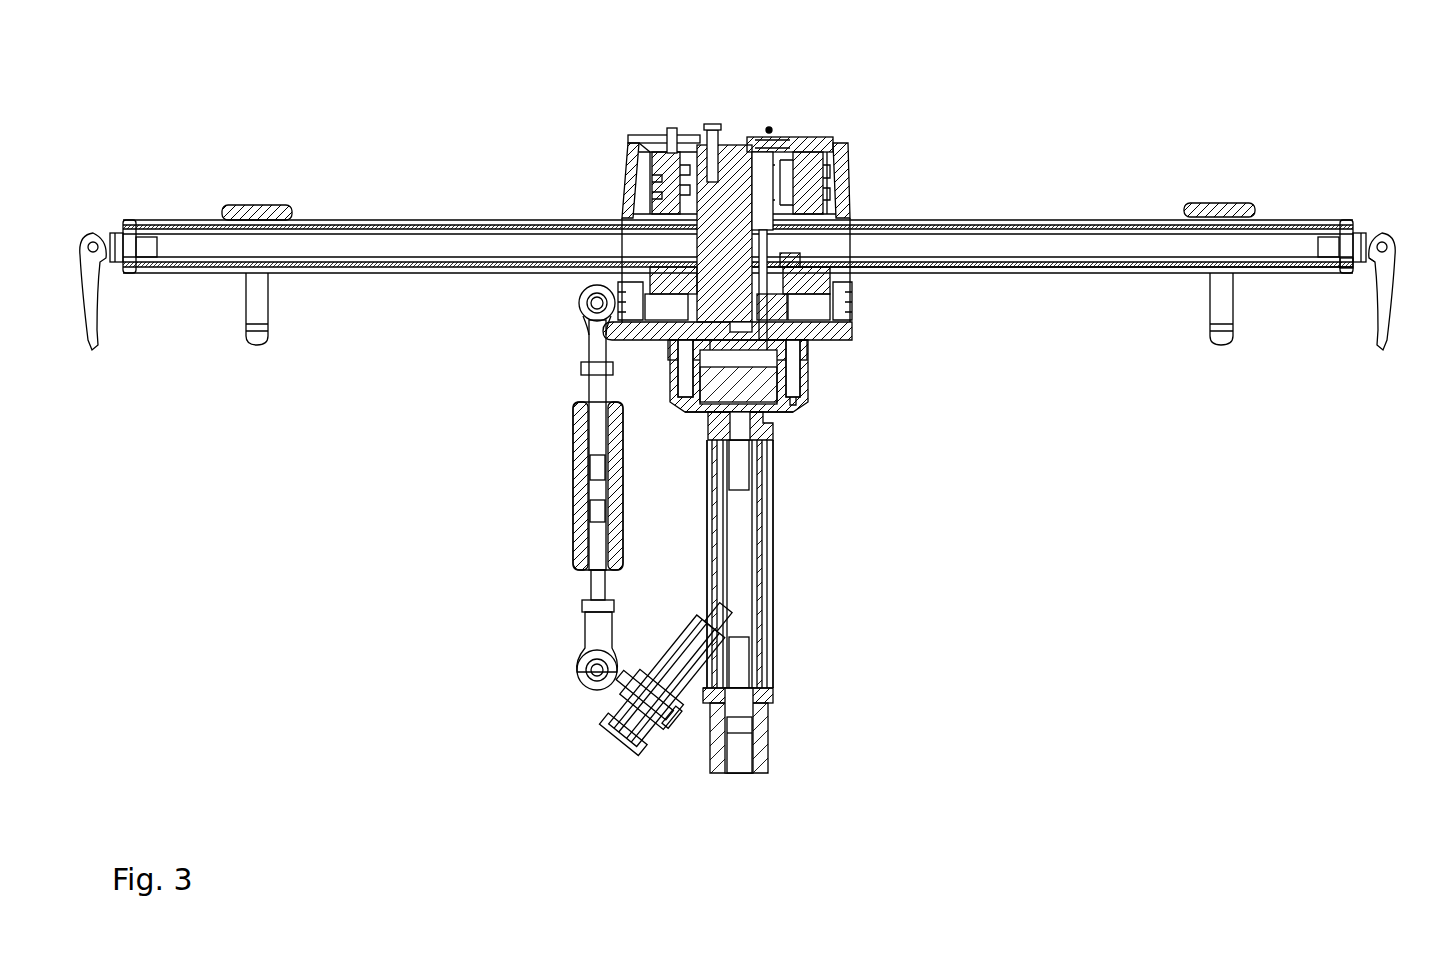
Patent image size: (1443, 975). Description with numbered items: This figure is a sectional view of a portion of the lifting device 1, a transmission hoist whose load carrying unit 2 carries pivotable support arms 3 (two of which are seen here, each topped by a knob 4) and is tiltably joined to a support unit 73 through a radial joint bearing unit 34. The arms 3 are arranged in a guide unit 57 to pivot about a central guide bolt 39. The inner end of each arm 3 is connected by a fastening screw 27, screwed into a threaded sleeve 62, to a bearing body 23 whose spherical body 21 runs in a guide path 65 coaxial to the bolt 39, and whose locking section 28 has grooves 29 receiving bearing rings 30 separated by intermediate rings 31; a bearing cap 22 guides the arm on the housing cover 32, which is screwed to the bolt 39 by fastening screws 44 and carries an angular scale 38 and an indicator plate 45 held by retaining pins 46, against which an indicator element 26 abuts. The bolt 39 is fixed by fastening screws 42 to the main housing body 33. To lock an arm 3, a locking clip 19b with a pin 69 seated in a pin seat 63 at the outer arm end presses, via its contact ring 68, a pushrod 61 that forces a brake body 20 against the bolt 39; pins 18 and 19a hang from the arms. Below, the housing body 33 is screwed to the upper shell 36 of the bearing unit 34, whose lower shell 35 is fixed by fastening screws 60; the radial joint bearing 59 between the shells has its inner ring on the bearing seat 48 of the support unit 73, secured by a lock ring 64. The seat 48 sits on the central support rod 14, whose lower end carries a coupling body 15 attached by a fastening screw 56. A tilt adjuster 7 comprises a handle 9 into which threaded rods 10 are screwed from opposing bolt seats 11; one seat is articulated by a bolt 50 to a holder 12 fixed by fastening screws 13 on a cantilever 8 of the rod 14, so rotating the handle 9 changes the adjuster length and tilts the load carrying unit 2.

The lifting device 1 is at (1175, 690).
The load carrying unit 2 is at (1045, 93).
The support arm 3 is at (1085, 218).
The knob 4 is at (1205, 204).
The tilt adjuster 7 is at (488, 566).
The cantilever 8 is at (660, 690).
The handle 9 is at (575, 497).
The threaded rod 10 is at (600, 590).
The bolt seat 11 is at (598, 645).
The holder 12 is at (600, 702).
The fastening screw 13 is at (633, 675).
The support rod 14 is at (768, 580).
The coupling body 15 is at (770, 703).
The pin 18 is at (254, 308).
The pin 19a is at (1215, 322).
The locking clip 19b is at (1390, 322).
The brake body 20 is at (765, 295).
The spherical body 21 is at (792, 342).
The bearing cap 22 is at (666, 150).
The bearing body 23 is at (795, 272).
The indicator element 26 is at (852, 148).
The fastening screw 27 is at (640, 286).
The locking section 28 is at (828, 181).
The groove 29 is at (666, 192).
The bearing ring 30 is at (673, 160).
The intermediate ring 31 is at (662, 188).
The housing cover 32 is at (745, 137).
The main housing body 33 is at (832, 316).
The radial joint bearing unit 34 is at (678, 418).
The lower shell 35 is at (672, 406).
The upper shell 36 is at (815, 348).
The angular scale 38 is at (815, 150).
The guide bolt 39 is at (730, 205).
The fastening screw 42 is at (803, 365).
The fastening screw 44 is at (716, 150).
The indicator plate 45 is at (790, 140).
The retaining pin 46 is at (770, 127).
The bearing seat 48 is at (775, 432).
The bolt 50 is at (596, 672).
The fastening screw 56 is at (750, 718).
The guide unit 57 is at (922, 170).
The radial joint bearing 59 is at (737, 388).
The fastening screw 60 is at (668, 392).
The pushrod 61 is at (1028, 262).
The threaded sleeve 62 is at (620, 248).
The pin seat 63 is at (1322, 237).
The lock ring 64 is at (662, 358).
The guide path 65 is at (656, 342).
The contact ring 68 is at (1350, 264).
The pin 69 is at (1367, 238).
The support unit 73 is at (922, 663).